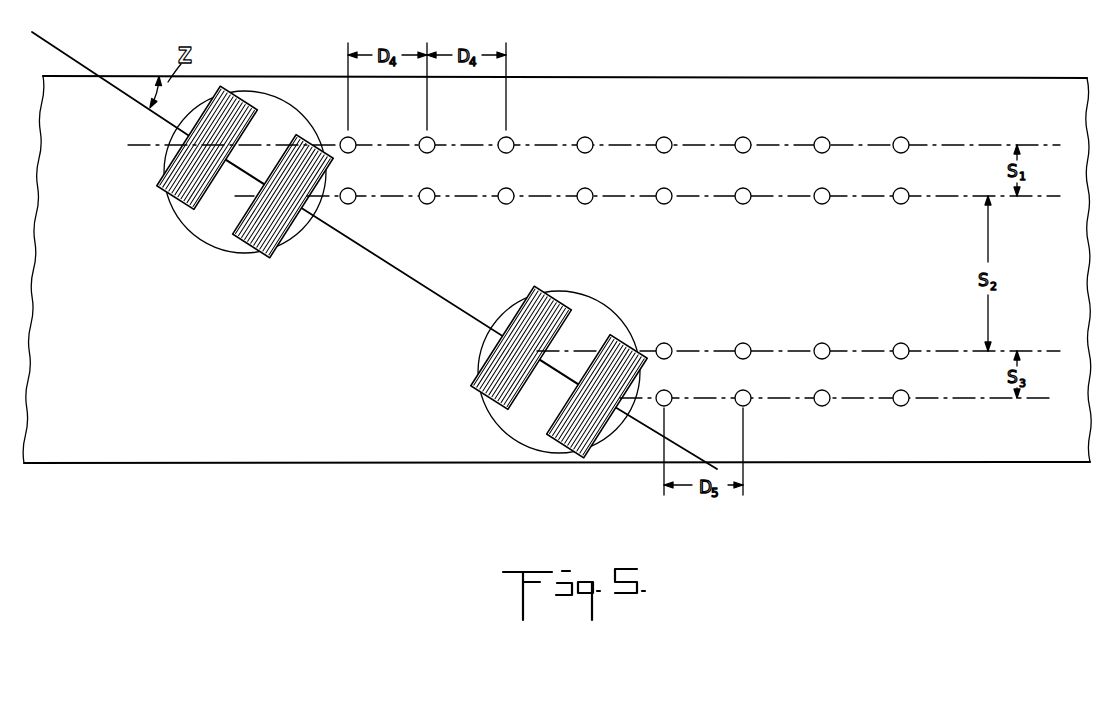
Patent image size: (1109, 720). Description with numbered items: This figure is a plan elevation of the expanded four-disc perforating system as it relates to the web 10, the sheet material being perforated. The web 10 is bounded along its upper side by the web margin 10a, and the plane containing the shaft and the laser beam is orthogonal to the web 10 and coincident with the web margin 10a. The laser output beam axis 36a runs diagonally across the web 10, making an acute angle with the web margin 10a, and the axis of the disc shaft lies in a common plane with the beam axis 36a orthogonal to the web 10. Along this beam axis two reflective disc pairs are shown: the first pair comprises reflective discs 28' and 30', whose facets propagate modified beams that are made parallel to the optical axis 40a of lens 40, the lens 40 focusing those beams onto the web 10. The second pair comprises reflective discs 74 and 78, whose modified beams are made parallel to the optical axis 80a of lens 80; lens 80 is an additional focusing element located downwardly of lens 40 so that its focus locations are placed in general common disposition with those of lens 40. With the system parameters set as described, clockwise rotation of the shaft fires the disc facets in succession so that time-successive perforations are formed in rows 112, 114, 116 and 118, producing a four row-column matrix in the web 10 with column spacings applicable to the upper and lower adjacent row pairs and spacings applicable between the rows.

The web 10 is at (130, 365).
The web margin 10a is at (795, 78).
The reflective disc 28' is at (178, 156).
The reflective disc 30' is at (277, 220).
The laser output beam axis 36a is at (379, 254).
The lens 40 is at (193, 233).
The optical axis of lens 40a is at (246, 167).
The reflective disc 74 is at (540, 297).
The reflective disc 78 is at (635, 350).
The lens 80 is at (503, 420).
The optical axis of lens 80a is at (558, 368).
The row of perforations 112 is at (936, 144).
The row of perforations 114 is at (941, 195).
The row of perforations 116 is at (934, 348).
The row of perforations 118 is at (937, 396).